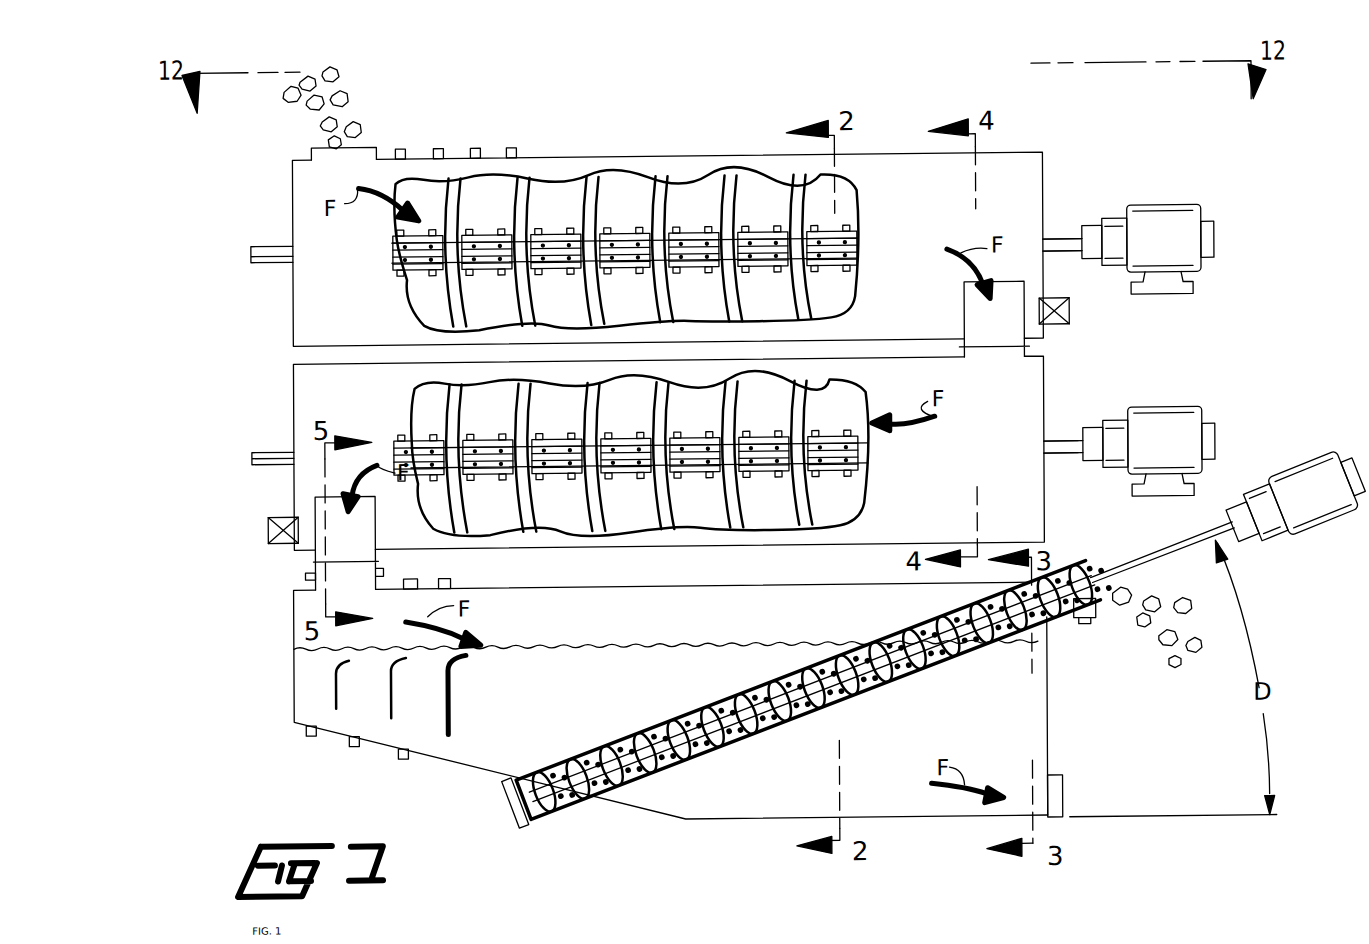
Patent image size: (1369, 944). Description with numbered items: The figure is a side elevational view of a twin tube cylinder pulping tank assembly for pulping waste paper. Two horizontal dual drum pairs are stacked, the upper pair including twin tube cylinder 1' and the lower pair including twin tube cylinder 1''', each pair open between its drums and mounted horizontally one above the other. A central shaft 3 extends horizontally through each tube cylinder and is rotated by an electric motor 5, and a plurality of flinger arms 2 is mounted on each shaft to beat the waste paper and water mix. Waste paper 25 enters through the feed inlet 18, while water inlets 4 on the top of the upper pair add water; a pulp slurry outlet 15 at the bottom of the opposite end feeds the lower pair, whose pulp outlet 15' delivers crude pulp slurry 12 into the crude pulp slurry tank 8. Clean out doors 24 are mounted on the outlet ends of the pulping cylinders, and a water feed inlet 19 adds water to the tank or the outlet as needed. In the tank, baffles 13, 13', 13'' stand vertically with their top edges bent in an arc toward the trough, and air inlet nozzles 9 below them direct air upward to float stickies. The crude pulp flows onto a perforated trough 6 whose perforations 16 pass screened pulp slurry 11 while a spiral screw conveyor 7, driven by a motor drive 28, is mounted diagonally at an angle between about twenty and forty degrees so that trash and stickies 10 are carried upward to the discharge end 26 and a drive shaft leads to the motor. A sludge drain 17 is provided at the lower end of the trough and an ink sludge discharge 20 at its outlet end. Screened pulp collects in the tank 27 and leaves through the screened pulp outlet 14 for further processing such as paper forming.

The twin tube cylinder 1' is at (667, 221).
The twin tube cylinder 1''' is at (672, 452).
The flinger arms 2 is at (629, 352).
The central shaft 3 is at (270, 243).
The water inlets 4 is at (513, 146).
The electric motor 5 is at (1200, 220).
The perforated trough 6 is at (581, 812).
The spiral screw conveyor 7 is at (583, 763).
The crude pulp slurry tank 8 is at (293, 660).
The air inlet nozzles 9 is at (400, 757).
The trash and stickies 10 is at (1190, 652).
The screened pulp slurry 11 is at (1040, 697).
The crude pulp slurry 12 is at (598, 712).
The baffle 13 is at (326, 685).
The baffle 13' is at (381, 688).
The baffle 13'' is at (436, 695).
The screened pulp outlet 14 is at (1062, 800).
The pulp slurry outlet 15 is at (994, 319).
The pulp outlet 15' is at (348, 543).
The perforations 16 is at (743, 740).
The sludge drain 17 is at (506, 814).
The feed inlet 18 is at (318, 143).
The water feed inlet 19 is at (304, 574).
The ink sludge discharge 20 is at (1083, 625).
The clean out doors 24 is at (1072, 314).
The waste paper 25 is at (338, 68).
The discharge end 26 is at (1092, 573).
The tank 27 is at (1050, 724).
The motor drive 28 is at (1298, 457).